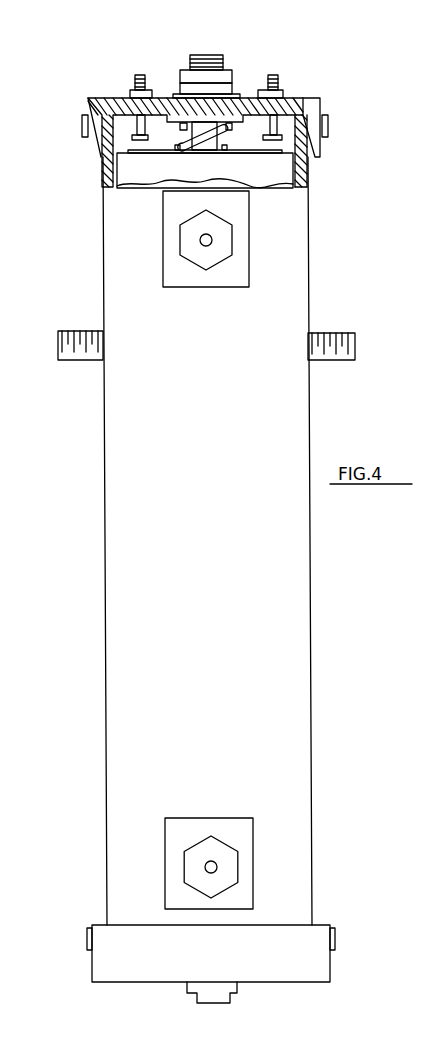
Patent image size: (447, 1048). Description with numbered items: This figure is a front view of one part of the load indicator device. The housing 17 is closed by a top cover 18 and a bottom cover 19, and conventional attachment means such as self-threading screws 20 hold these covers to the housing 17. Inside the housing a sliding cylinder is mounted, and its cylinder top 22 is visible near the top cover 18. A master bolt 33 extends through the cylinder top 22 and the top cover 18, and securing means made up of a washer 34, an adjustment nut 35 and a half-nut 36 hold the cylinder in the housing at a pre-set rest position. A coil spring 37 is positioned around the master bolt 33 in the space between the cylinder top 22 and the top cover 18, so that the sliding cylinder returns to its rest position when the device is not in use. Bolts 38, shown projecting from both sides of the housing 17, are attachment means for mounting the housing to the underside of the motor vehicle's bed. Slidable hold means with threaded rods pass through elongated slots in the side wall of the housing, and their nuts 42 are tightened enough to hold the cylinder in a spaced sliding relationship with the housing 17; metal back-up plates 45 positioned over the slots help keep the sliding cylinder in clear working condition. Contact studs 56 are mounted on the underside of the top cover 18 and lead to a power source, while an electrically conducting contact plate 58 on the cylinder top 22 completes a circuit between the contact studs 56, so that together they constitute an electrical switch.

The housing 17 is at (235, 539).
The top cover 18 is at (104, 103).
The bottom cover 19 is at (118, 970).
The self-threading screws 20 is at (82, 128).
The cylinder top 22 is at (167, 172).
The master bolt 33 is at (218, 134).
The washer 34 is at (235, 99).
The adjustment nut 35 is at (232, 96).
The half-nut 36 is at (224, 74).
The coil spring 37 is at (224, 129).
The bolts 38 is at (78, 356).
The nuts 42 is at (223, 235).
The metal back-up plates 45 is at (183, 272).
The contact studs 56 is at (137, 127).
The contact plate 58 is at (207, 153).